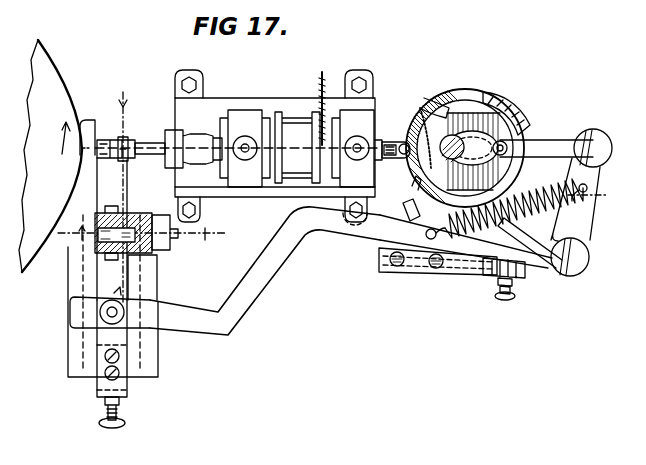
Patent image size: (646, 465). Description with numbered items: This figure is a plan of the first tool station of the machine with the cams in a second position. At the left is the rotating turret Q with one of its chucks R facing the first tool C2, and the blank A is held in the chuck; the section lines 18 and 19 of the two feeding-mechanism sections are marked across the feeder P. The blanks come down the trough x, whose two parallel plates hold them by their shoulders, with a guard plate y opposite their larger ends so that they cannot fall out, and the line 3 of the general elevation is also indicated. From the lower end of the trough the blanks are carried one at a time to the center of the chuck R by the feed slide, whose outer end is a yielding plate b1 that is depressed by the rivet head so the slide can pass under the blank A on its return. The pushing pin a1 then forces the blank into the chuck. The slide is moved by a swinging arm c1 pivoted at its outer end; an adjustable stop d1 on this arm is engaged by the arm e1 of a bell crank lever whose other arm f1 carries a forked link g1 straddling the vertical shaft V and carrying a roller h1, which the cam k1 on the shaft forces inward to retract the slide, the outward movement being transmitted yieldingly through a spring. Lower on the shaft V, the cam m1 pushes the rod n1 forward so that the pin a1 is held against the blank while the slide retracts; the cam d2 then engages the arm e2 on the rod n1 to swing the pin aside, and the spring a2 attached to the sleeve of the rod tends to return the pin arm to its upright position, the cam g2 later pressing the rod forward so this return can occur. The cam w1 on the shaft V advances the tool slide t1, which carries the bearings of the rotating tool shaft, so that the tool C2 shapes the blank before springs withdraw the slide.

The turret Q is at (50, 156).
The chuck R is at (85, 118).
The section line 19 19 is at (116, 190).
The section line 18 18 is at (143, 235).
The blank A is at (112, 143).
The yielding plate b1 is at (125, 136).
The pushing pin a1 is at (132, 146).
The first tool C2 is at (246, 110).
The spring a2 is at (316, 101).
The feeder P is at (150, 290).
The trough x is at (95, 222).
The guard plate y is at (136, 216).
The section line 3 3 is at (102, 272).
The swinging arm c1 is at (270, 275).
The second cam d2 is at (438, 271).
The adjustable stop d1 is at (496, 238).
The arm of bell crank lever e1 is at (530, 243).
The slide t1 is at (589, 202).
The arm of bell crank lever f1 is at (577, 204).
The forked link g1 is at (548, 143).
The roller h1 is at (520, 180).
The vertical shaft V is at (440, 104).
The cam g2 is at (464, 102).
The cam k1 is at (484, 112).
The cam w1 is at (552, 105).
The rod n1 is at (392, 140).
The arm e2 is at (396, 144).
The cam m1 is at (410, 192).